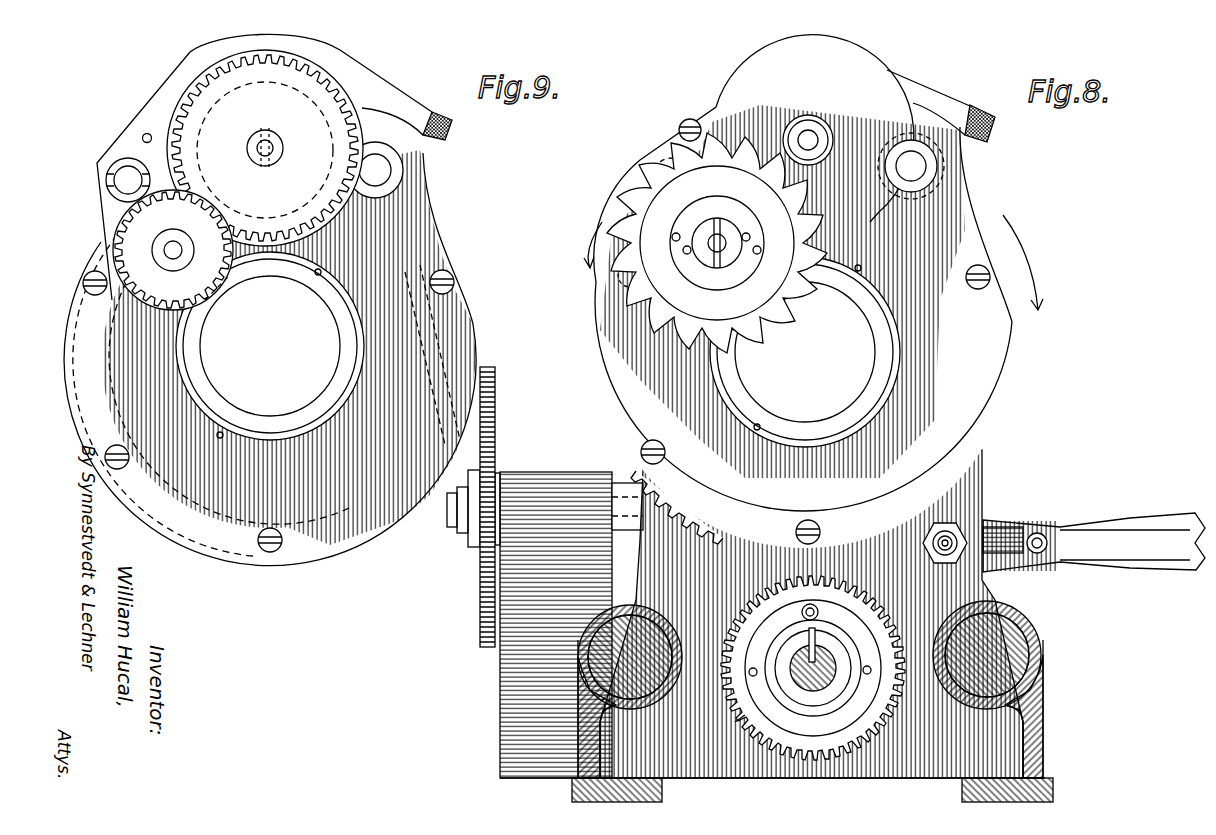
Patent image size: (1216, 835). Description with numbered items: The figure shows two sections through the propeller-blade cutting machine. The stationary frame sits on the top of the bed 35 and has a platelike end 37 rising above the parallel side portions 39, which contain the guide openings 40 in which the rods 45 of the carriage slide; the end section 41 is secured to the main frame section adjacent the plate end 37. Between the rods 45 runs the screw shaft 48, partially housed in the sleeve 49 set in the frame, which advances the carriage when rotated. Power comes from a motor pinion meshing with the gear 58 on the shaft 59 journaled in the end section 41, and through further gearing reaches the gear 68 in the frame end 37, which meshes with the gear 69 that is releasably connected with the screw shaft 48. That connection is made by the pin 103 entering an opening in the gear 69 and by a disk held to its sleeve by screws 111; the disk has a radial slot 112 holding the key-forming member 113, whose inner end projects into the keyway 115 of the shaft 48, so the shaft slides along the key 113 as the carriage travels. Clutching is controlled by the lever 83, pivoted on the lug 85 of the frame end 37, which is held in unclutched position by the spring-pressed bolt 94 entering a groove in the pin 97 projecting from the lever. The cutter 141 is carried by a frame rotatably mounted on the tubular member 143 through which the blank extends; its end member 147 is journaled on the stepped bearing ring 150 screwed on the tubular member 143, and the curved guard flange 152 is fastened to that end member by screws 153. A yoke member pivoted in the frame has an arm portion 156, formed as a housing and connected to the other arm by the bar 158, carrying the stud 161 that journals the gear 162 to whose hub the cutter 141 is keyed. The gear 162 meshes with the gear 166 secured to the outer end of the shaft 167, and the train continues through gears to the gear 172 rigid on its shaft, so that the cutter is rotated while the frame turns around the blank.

In FIG. 8, the bed 35 is at (575, 795).
In FIG. 8, the end 37 is at (700, 560).
In FIG. 8, the side portions 39 is at (578, 733).
In FIG. 8, the guide openings 40 is at (590, 652).
In FIG. 8, the end section 41 is at (540, 486).
In FIG. 8, the rods 45 is at (615, 665).
In FIG. 8, the screw shaft 48 is at (835, 680).
In FIG. 8, the sleeve 49 is at (790, 672).
In FIG. 8, the gear 58 is at (495, 432).
In FIG. 8, the shaft 59 is at (450, 510).
In FIG. 8, the gear 68 is at (790, 586).
In FIG. 8, the gear 69 is at (736, 722).
In FIG. 8, the lever 83 is at (1160, 525).
In FIG. 8, the lug 85 is at (998, 530).
In FIG. 8, the bolt 94 is at (1035, 533).
In FIG. 8, the pin 97 is at (1042, 538).
In FIG. 8, the pin 103 is at (848, 606).
In FIG. 8, the screws 111 is at (750, 668).
In FIG. 8, the radial slot 112 is at (820, 610).
In FIG. 8, the key-forming member 113 is at (808, 642).
In FIG. 8, the keyway 115 is at (850, 650).
In FIG. 8, the cutter 141 is at (660, 322).
In FIG. 9, the tubular member 143 is at (355, 352).
In FIG. 8, the tubular member 143 is at (882, 352).
In FIG. 9, the end member 147 is at (433, 230).
In FIG. 8, the end member 147 is at (985, 385).
In FIG. 9, the stepped bearing ring 150 is at (335, 292).
In FIG. 8, the stepped bearing ring 150 is at (872, 292).
In FIG. 9, the guard flange 152 is at (430, 340).
In FIG. 9, the screws 153 is at (90, 272).
In FIG. 8, the screws 153 is at (658, 442).
In FIG. 9, the arm portion 156 is at (183, 92).
In FIG. 8, the arm portion 156 is at (722, 92).
In FIG. 9, the bar 158 is at (120, 183).
In FIG. 8, the bar 158 is at (660, 162).
In FIG. 9, the stud 161 is at (175, 243).
In FIG. 8, the stud 161 is at (722, 238).
In FIG. 9, the gear 162 is at (218, 290).
In FIG. 9, the gear 166 is at (300, 70).
In FIG. 9, the shaft 167 is at (257, 149).
In FIG. 8, the shaft 167 is at (812, 134).
In FIG. 8, the gear 172 is at (682, 522).